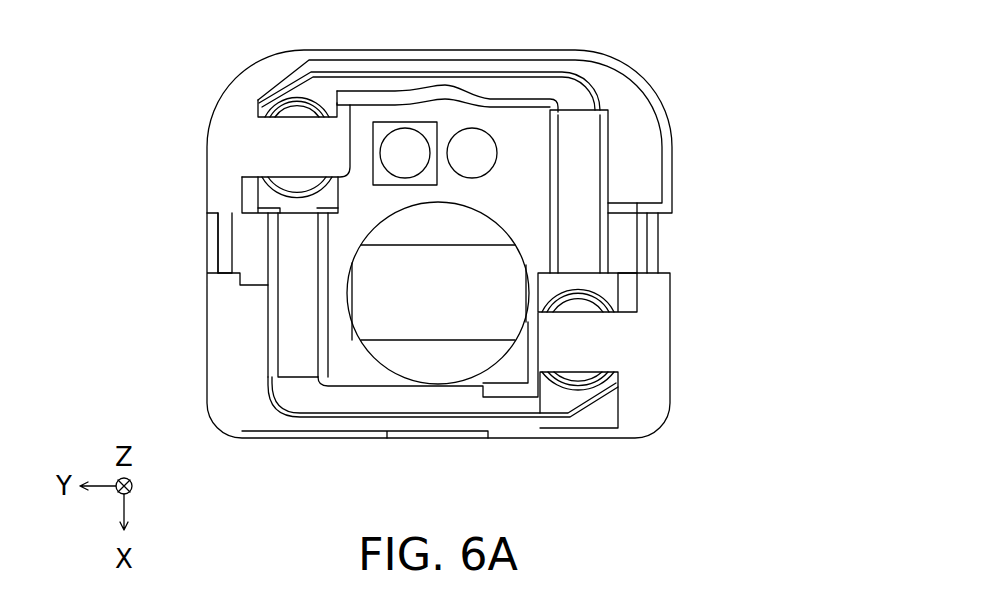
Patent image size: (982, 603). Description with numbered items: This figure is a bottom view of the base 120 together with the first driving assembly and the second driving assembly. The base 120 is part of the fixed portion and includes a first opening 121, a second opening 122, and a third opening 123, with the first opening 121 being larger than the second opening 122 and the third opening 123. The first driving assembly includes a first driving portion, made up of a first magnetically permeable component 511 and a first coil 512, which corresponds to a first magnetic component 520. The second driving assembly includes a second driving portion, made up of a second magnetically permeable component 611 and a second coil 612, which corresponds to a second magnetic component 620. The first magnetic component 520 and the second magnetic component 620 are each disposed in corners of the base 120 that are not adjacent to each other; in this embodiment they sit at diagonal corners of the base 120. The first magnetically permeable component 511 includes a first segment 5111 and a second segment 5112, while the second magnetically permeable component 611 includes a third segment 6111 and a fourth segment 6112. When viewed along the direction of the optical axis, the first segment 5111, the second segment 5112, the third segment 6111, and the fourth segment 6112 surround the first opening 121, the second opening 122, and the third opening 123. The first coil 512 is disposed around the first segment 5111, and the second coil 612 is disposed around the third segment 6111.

The base 120 is at (597, 340).
The first opening 121 is at (463, 318).
The second opening 122 is at (473, 145).
The third opening 123 is at (407, 145).
The first magnetically permeable component 511 is at (576, 85).
The first segment 5111 is at (664, 147).
The second segment 5112 is at (520, 82).
The first coil 512 is at (583, 180).
The first magnetic component 520 is at (583, 305).
The second magnetically permeable component 611 is at (312, 398).
The third segment 6111 is at (285, 308).
The fourth segment 6112 is at (340, 404).
The second coil 612 is at (285, 250).
The second magnetic component 620 is at (297, 115).